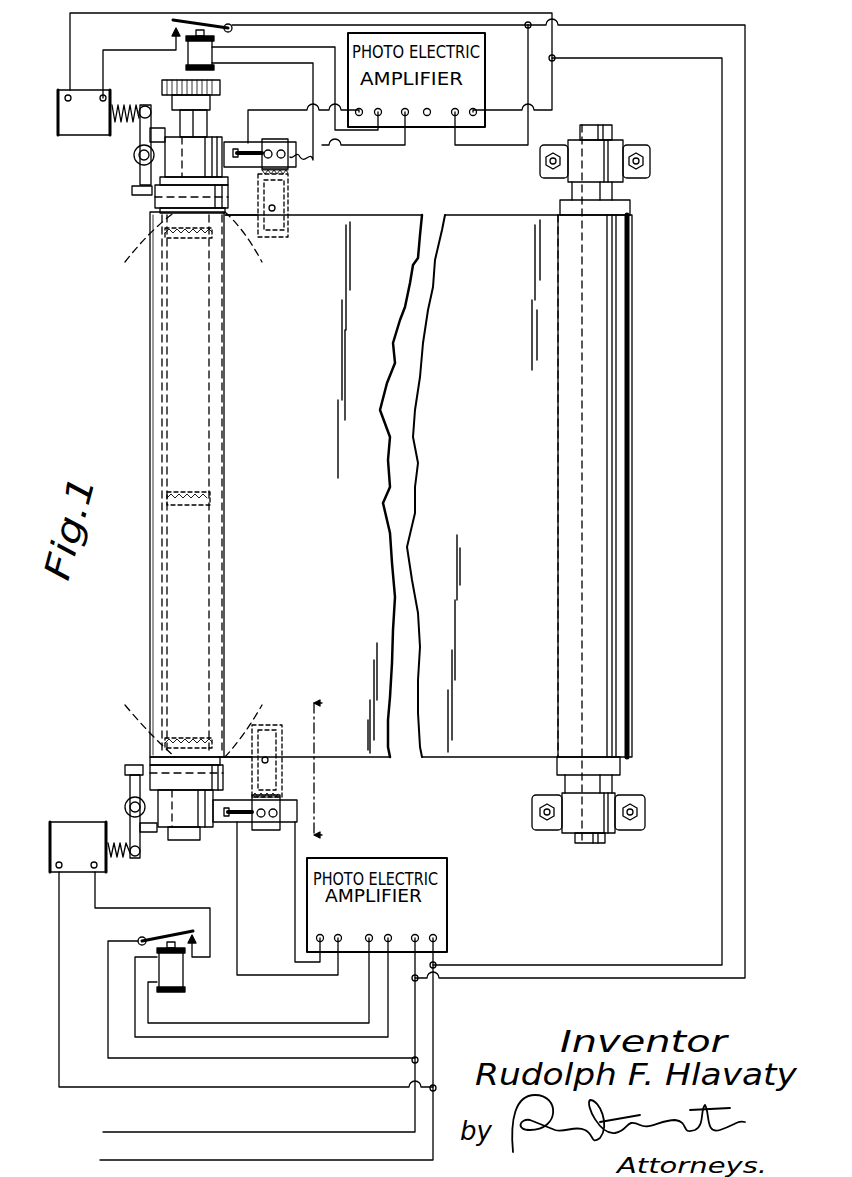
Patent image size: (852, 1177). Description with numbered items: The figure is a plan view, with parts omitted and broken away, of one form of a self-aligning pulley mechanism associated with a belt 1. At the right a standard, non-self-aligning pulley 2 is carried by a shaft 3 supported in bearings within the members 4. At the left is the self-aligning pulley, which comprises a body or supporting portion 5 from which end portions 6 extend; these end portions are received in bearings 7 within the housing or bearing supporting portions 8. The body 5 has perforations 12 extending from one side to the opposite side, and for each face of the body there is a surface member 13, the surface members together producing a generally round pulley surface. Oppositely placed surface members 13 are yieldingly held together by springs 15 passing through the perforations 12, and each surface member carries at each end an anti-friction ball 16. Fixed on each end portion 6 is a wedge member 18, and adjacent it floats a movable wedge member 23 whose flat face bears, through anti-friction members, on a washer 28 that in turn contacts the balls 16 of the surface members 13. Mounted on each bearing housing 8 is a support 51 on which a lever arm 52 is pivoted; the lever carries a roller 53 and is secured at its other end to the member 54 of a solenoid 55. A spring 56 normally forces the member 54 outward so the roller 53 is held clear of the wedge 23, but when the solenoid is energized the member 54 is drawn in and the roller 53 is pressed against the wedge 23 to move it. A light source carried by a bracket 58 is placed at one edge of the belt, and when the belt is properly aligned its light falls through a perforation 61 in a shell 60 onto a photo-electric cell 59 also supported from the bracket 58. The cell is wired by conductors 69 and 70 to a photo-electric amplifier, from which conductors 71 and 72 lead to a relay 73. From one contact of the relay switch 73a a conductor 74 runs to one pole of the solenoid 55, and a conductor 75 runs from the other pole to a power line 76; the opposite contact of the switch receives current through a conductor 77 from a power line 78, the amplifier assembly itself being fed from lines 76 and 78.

The belt 1 is at (388, 507).
The standard pulley 2 is at (491, 484).
The shaft 3 is at (593, 489).
The bearing members 4 is at (591, 495).
The pulley body 5 is at (165, 484).
The end portions 6 is at (201, 476).
The bearings 7 is at (190, 845).
The bearing supporting portions 8 is at (182, 499).
The perforations 12 is at (203, 485).
The surface members 13 is at (178, 485).
The springs 15 is at (164, 488).
The ball 16 is at (176, 484).
The wedge member 18 is at (198, 487).
The movable wedge member 23 is at (162, 485).
The washer 28 is at (244, 499).
The support 51 is at (106, 481).
The lever arm 52 is at (120, 481).
The roller 53 is at (110, 480).
The solenoid member 54 is at (142, 478).
The solenoid 55 is at (59, 481).
The spring 56 is at (107, 458).
The bracket 58 is at (255, 487).
The photo-electric cell 59 is at (271, 485).
The shell 60 is at (306, 485).
The perforation 61 is at (297, 498).
The conductor 69 is at (287, 898).
The conductor 70 is at (288, 892).
The conductor 71 is at (338, 524).
The conductor 72 is at (252, 536).
The relay 73 is at (183, 517).
The relay switch 73a is at (150, 477).
The conductor 74 is at (138, 492).
The conductor 75 is at (286, 550).
The power line 76 is at (411, 607).
The conductor 77 is at (406, 541).
The power line 78 is at (433, 578).